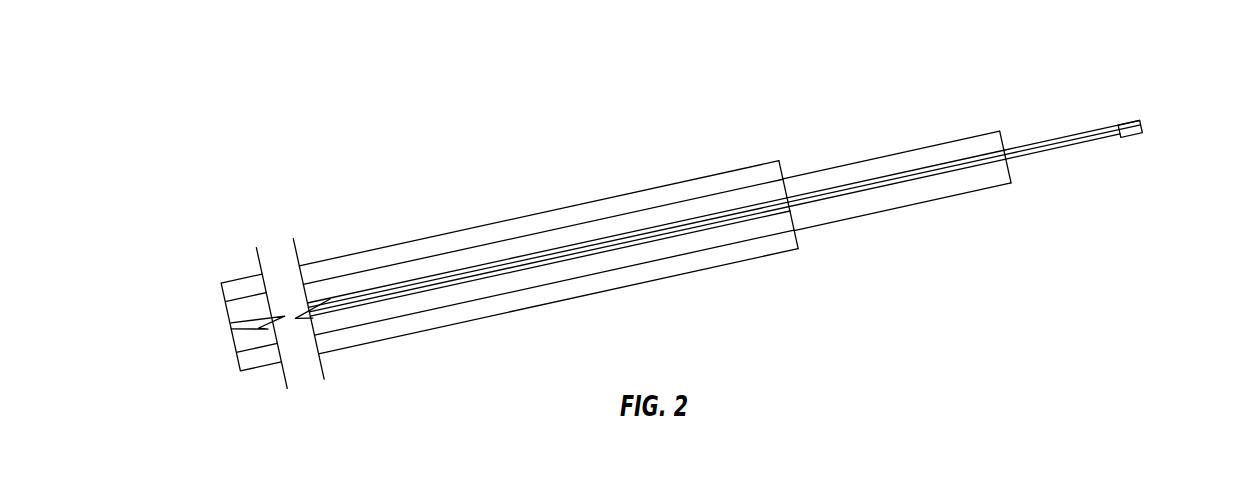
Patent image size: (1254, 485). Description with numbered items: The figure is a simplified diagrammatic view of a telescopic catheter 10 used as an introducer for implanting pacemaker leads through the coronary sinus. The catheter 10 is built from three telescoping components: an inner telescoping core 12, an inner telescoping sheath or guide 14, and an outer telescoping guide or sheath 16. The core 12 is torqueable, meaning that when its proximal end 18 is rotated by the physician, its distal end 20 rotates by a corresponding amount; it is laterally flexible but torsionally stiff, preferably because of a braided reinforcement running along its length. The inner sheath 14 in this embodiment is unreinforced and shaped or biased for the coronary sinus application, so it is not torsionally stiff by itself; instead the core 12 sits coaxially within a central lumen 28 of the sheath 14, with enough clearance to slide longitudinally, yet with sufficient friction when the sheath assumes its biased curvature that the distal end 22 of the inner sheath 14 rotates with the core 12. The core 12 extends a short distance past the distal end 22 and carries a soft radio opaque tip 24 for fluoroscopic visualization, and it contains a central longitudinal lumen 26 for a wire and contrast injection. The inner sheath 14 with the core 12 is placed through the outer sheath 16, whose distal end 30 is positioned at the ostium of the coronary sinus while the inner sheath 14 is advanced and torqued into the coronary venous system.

The telescopic catheter 10 is at (238, 132).
The inner telescoping core 12 is at (1073, 139).
The inner telescoping sheath 14 is at (897, 180).
The outer telescoping sheath 16 is at (548, 256).
The proximal end of core 18 is at (257, 321).
The distal end of core 20 is at (1130, 128).
The distal end of inner sheath 22 is at (1005, 157).
The soft radio opaque tip 24 is at (1128, 122).
The lumen 26 is at (1063, 146).
The central lumen 28 is at (650, 236).
The distal end of outer sheath 30 is at (788, 205).